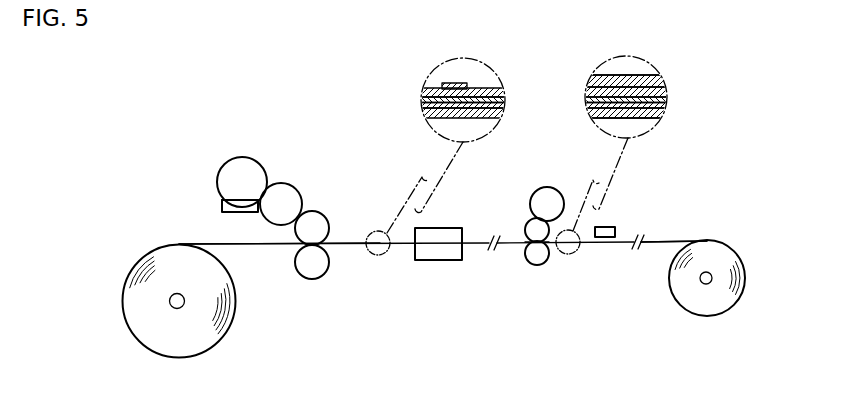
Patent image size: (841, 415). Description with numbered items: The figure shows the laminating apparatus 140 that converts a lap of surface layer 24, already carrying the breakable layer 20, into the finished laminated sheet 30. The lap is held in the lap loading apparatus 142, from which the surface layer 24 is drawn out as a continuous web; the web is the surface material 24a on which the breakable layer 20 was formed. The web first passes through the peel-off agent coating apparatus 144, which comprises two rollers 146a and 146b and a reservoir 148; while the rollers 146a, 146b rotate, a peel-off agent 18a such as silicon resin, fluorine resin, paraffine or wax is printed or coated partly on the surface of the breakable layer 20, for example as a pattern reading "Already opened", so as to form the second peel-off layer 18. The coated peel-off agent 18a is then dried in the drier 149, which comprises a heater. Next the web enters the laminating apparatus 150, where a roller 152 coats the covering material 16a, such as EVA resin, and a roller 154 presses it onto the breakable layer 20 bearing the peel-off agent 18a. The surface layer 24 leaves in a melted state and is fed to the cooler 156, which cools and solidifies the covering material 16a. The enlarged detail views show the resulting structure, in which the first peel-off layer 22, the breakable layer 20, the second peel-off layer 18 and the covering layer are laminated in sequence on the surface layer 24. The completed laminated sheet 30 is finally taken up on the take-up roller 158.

The laminating apparatus 140 is at (347, 90).
The lap loading apparatus 142 is at (183, 306).
The surface material 24a is at (268, 247).
The roller 146a is at (255, 133).
The peel-off agent coating apparatus 144 is at (309, 200).
The roller 146b is at (317, 227).
The reservoir 148 is at (233, 213).
The peel-off agent 18a is at (222, 202).
The second peel-off layer 18 is at (628, 78).
The covering material 16a is at (660, 80).
The breakable layer 20 is at (502, 92).
The first peel-off layer 22 is at (498, 103).
The surface layer 24 is at (497, 117).
The drier 149 is at (442, 262).
The roller 152 is at (532, 232).
The roller 154 is at (547, 262).
The laminating apparatus for covering material 150 is at (535, 273).
The cooler 156 is at (612, 223).
The laminated sheet 30 is at (675, 241).
The take-up roller 158 is at (706, 284).